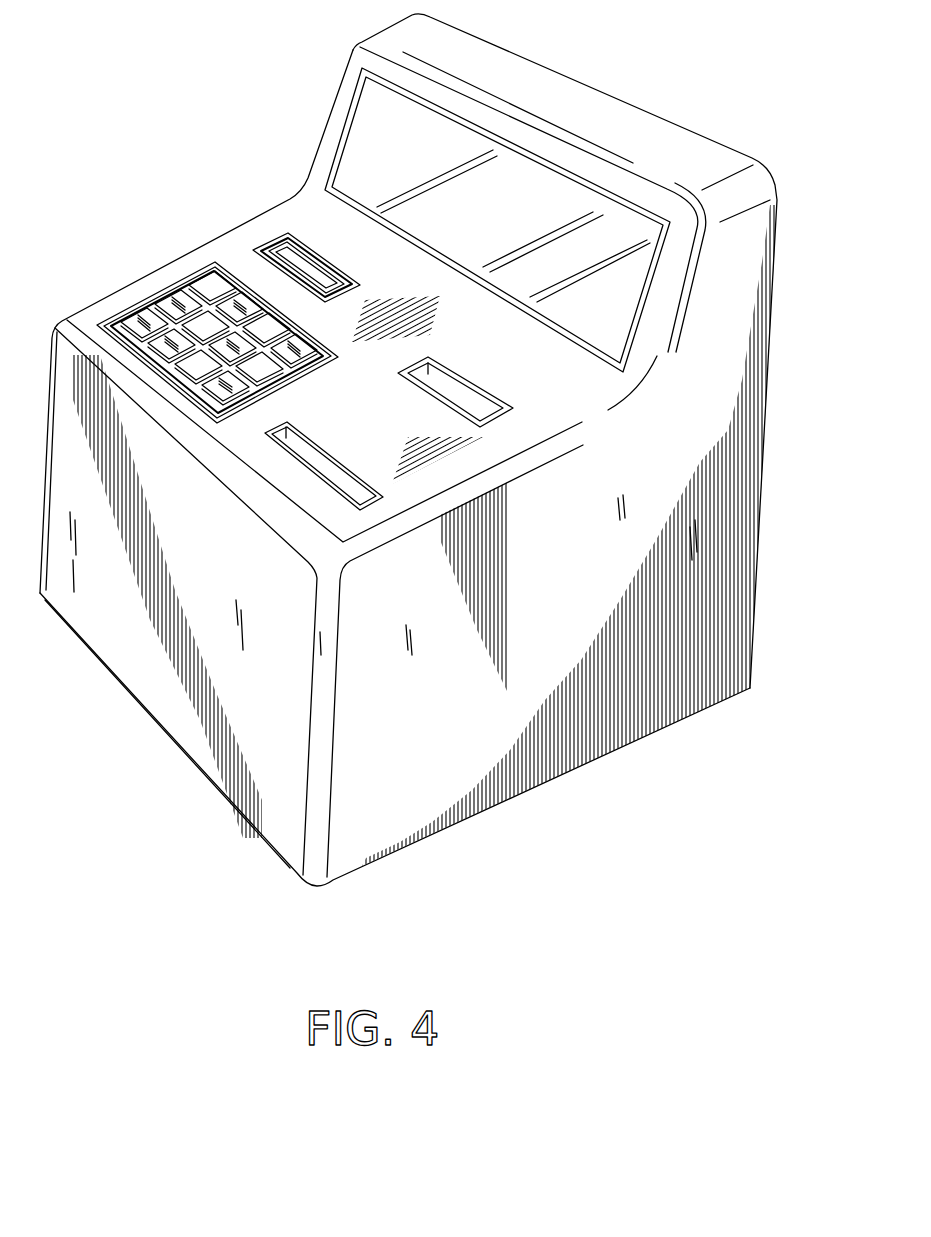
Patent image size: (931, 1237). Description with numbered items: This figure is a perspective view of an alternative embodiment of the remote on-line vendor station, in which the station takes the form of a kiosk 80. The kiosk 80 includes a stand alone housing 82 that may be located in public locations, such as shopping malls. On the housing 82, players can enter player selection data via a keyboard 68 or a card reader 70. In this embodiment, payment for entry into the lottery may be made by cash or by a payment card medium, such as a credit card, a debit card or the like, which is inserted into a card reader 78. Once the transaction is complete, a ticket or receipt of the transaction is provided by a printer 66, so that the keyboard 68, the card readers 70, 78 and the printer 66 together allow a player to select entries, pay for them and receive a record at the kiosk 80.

The printer 66 is at (283, 253).
The keyboard 68 is at (170, 297).
The card reader 70 is at (325, 457).
The card reader 78 is at (483, 395).
The kiosk 80 is at (117, 785).
The stand alone housing 82 is at (140, 687).